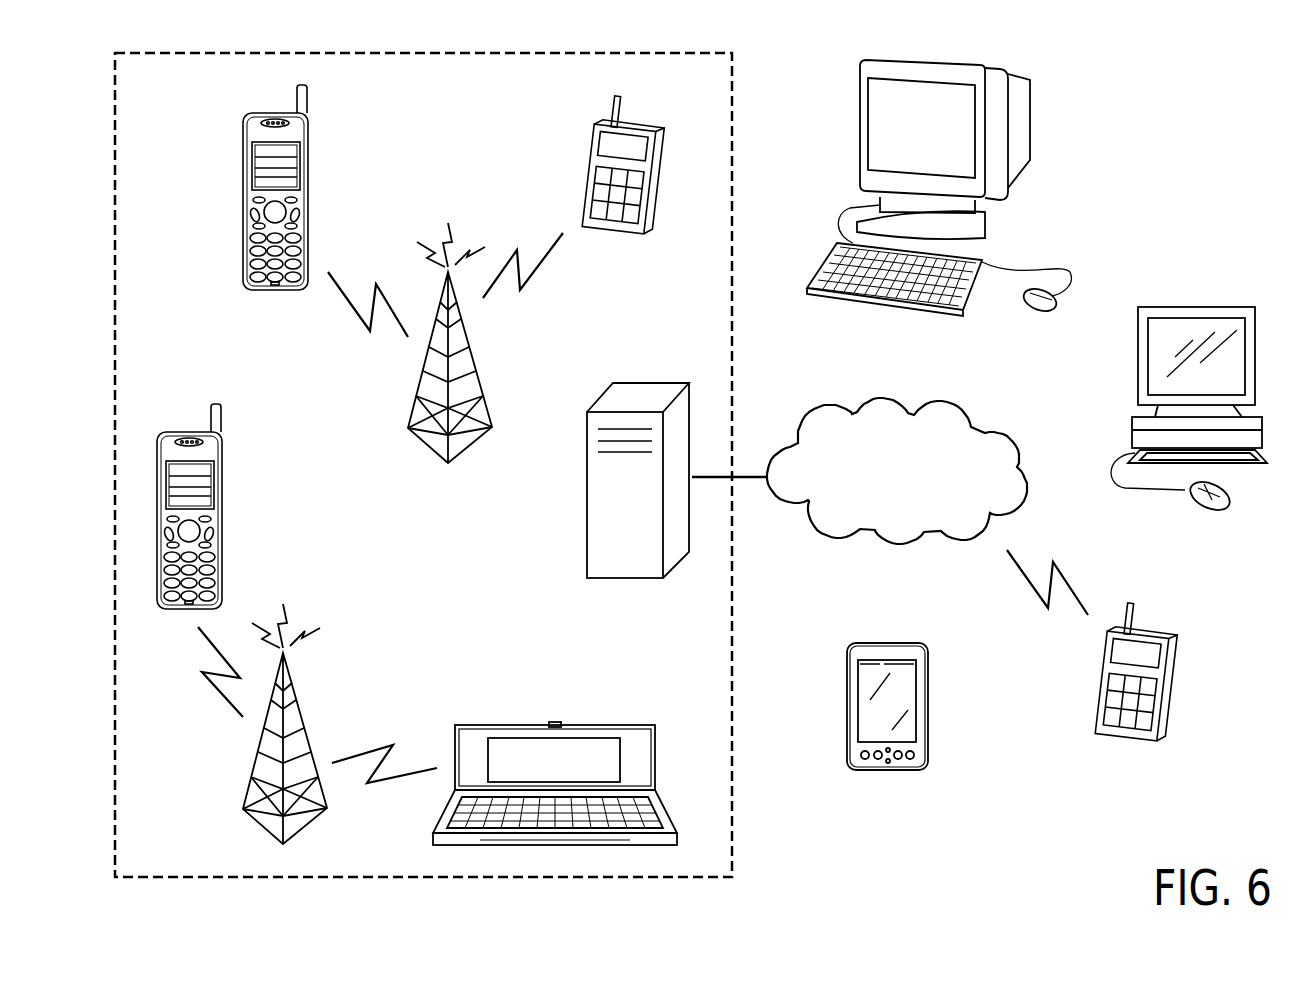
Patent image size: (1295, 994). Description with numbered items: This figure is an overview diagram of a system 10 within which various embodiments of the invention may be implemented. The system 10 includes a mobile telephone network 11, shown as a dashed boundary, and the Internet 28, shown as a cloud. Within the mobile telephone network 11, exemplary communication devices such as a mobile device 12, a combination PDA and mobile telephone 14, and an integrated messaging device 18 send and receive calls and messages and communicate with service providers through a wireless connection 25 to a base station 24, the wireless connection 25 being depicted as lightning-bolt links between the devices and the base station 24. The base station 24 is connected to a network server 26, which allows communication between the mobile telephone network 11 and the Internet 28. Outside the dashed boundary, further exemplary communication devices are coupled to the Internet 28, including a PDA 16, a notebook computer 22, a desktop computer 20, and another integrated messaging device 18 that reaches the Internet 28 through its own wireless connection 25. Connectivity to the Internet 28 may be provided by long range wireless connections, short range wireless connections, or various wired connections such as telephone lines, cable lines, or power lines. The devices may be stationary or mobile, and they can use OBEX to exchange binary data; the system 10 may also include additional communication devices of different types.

The system 10 is at (1246, 582).
The mobile telephone network 11 is at (162, 99).
The mobile device 12 is at (311, 200).
The combination PDA and mobile telephone 14 is at (556, 722).
The PDA 16 is at (930, 700).
The integrated messaging device 18 is at (588, 180).
The desktop computer 20 is at (1030, 118).
The notebook computer 22 is at (1197, 305).
The base station 24 is at (470, 350).
The wireless connection 25 is at (222, 695).
The network server 26 is at (587, 495).
The Internet 28 is at (940, 398).